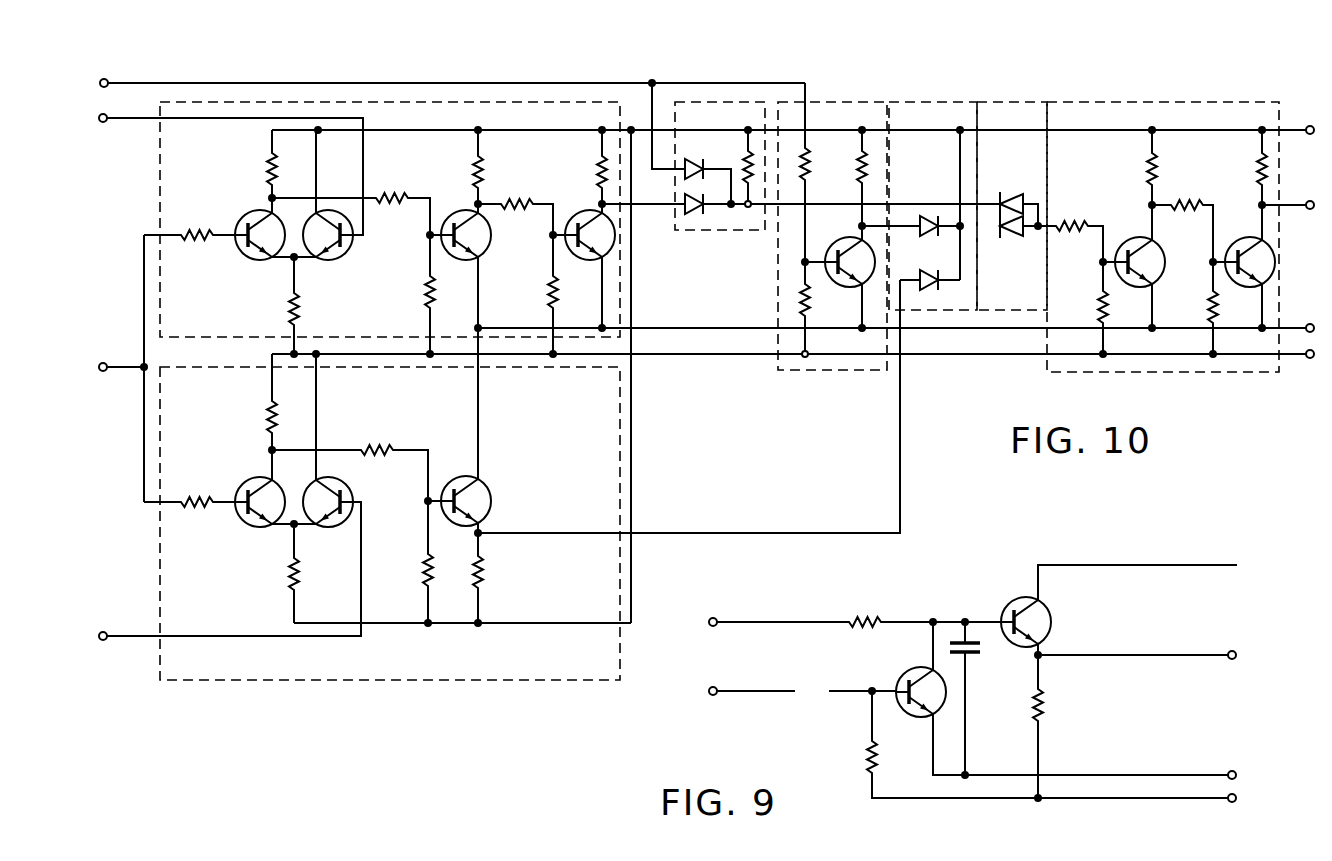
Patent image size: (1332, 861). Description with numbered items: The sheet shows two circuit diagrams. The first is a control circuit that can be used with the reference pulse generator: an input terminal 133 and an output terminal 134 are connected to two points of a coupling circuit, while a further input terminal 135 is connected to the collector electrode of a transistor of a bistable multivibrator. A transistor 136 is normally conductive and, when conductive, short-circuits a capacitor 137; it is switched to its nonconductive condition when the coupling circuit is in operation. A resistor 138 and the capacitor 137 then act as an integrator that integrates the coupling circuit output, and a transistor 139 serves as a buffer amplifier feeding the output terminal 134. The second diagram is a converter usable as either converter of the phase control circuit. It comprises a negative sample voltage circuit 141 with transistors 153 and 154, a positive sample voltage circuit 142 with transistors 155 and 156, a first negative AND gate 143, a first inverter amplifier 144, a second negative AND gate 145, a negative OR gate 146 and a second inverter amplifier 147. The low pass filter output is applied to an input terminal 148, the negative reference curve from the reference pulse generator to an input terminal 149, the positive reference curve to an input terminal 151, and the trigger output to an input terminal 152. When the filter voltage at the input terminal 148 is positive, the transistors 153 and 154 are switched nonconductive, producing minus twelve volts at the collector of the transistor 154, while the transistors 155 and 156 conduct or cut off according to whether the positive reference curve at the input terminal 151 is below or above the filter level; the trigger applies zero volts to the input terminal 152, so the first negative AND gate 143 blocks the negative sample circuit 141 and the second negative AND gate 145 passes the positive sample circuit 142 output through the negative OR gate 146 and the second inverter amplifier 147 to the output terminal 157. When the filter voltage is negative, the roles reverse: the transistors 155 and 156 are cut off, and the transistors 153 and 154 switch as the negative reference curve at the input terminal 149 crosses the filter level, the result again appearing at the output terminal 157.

In FIG. 9, the input terminal 133 is at (728, 604).
In FIG. 9, the output terminal 134 is at (1233, 651).
In FIG. 9, the input terminal 135 is at (711, 694).
In FIG. 9, the transistor 136 is at (918, 670).
In FIG. 9, the capacitor 137 is at (987, 661).
In FIG. 9, the resistor 138 is at (898, 600).
In FIG. 9, the transistor 139 is at (1050, 615).
In FIG. 10, the negative sample voltage circuit 141 is at (378, 101).
In FIG. 10, the positive sample voltage circuit 142 is at (255, 670).
In FIG. 10, the first negative AND gate 143 is at (702, 108).
In FIG. 10, the first inverter amplifier 144 is at (820, 108).
In FIG. 10, the second negative AND gate 145 is at (948, 102).
In FIG. 10, the negative OR gate 146 is at (1016, 116).
In FIG. 10, the second inverter amplifier 147 is at (1177, 110).
In FIG. 10, the input terminal 148 is at (103, 364).
In FIG. 10, the input terminal 149 is at (100, 121).
In FIG. 10, the input terminal 151 is at (103, 640).
In FIG. 10, the input terminal 152 is at (120, 64).
In FIG. 10, the transistor 153 is at (259, 212).
In FIG. 10, the transistor 154 is at (583, 212).
In FIG. 10, the transistor 155 is at (257, 479).
In FIG. 10, the transistor 156 is at (486, 493).
In FIG. 10, the output terminal 157 is at (1312, 190).